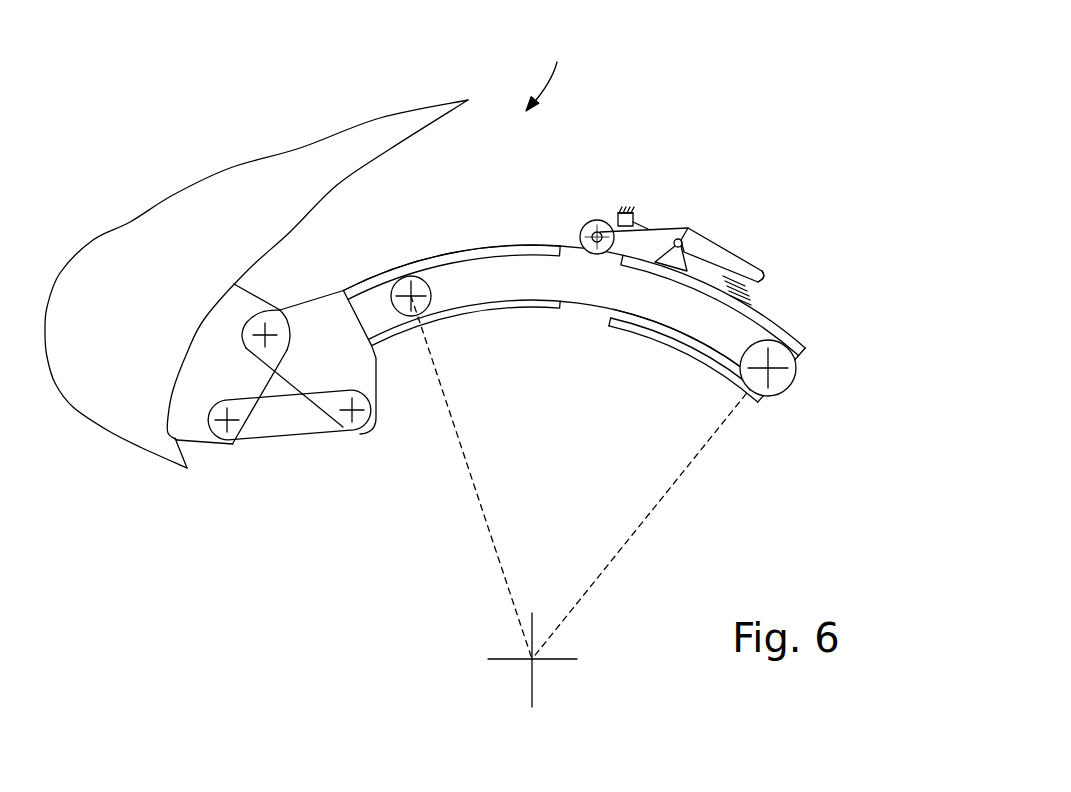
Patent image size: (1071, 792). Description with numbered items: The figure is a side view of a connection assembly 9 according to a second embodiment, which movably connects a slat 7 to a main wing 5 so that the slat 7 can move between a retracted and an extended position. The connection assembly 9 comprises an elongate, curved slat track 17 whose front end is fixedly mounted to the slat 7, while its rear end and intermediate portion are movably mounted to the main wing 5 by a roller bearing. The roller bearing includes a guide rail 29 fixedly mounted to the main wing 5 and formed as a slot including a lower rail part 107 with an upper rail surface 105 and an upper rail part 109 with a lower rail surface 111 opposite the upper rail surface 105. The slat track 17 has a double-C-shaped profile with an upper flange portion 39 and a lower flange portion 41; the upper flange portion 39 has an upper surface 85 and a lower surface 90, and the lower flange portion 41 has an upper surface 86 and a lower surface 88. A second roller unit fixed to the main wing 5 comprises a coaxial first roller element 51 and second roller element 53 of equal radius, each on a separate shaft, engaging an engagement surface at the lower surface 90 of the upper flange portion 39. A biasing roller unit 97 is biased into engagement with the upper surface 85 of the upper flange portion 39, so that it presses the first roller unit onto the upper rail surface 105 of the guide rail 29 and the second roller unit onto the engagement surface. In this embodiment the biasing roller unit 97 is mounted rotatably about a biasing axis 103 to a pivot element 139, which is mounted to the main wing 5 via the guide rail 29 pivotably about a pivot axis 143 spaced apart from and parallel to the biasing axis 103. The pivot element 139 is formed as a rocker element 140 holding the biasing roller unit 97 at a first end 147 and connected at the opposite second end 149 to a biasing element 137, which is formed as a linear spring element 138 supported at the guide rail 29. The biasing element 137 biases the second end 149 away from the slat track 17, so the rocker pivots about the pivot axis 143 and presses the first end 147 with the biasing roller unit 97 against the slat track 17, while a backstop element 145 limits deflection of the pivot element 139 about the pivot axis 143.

The main wing 5 is at (544, 459).
The slat 7 is at (107, 314).
The connection assembly 9 is at (544, 72).
The slat track 17 is at (539, 289).
The guide rail 29 is at (737, 350).
The upper flange portion 39 is at (374, 275).
The lower flange portion 41 is at (397, 333).
The first roller element 51 is at (783, 378).
The second roller element 53 is at (421, 280).
The upper surface 85 is at (571, 253).
The upper surface 86 is at (482, 302).
The lower surface 88 is at (576, 310).
The lower surface 90 is at (456, 262).
The biasing roller unit 97 is at (587, 222).
The biasing axis 103 is at (600, 232).
The upper rail surface 105 is at (741, 342).
The lower rail part 107 is at (620, 328).
The upper rail part 109 is at (813, 320).
The lower rail surface 111 is at (719, 302).
The biasing element 137 is at (825, 281).
The linear spring element 138 is at (772, 290).
The pivot element 139 is at (758, 231).
The rocker element 140 is at (758, 231).
The pivot axis 143 is at (681, 238).
The backstop element 145 is at (641, 214).
The first end 147 is at (611, 240).
The second end 149 is at (761, 274).